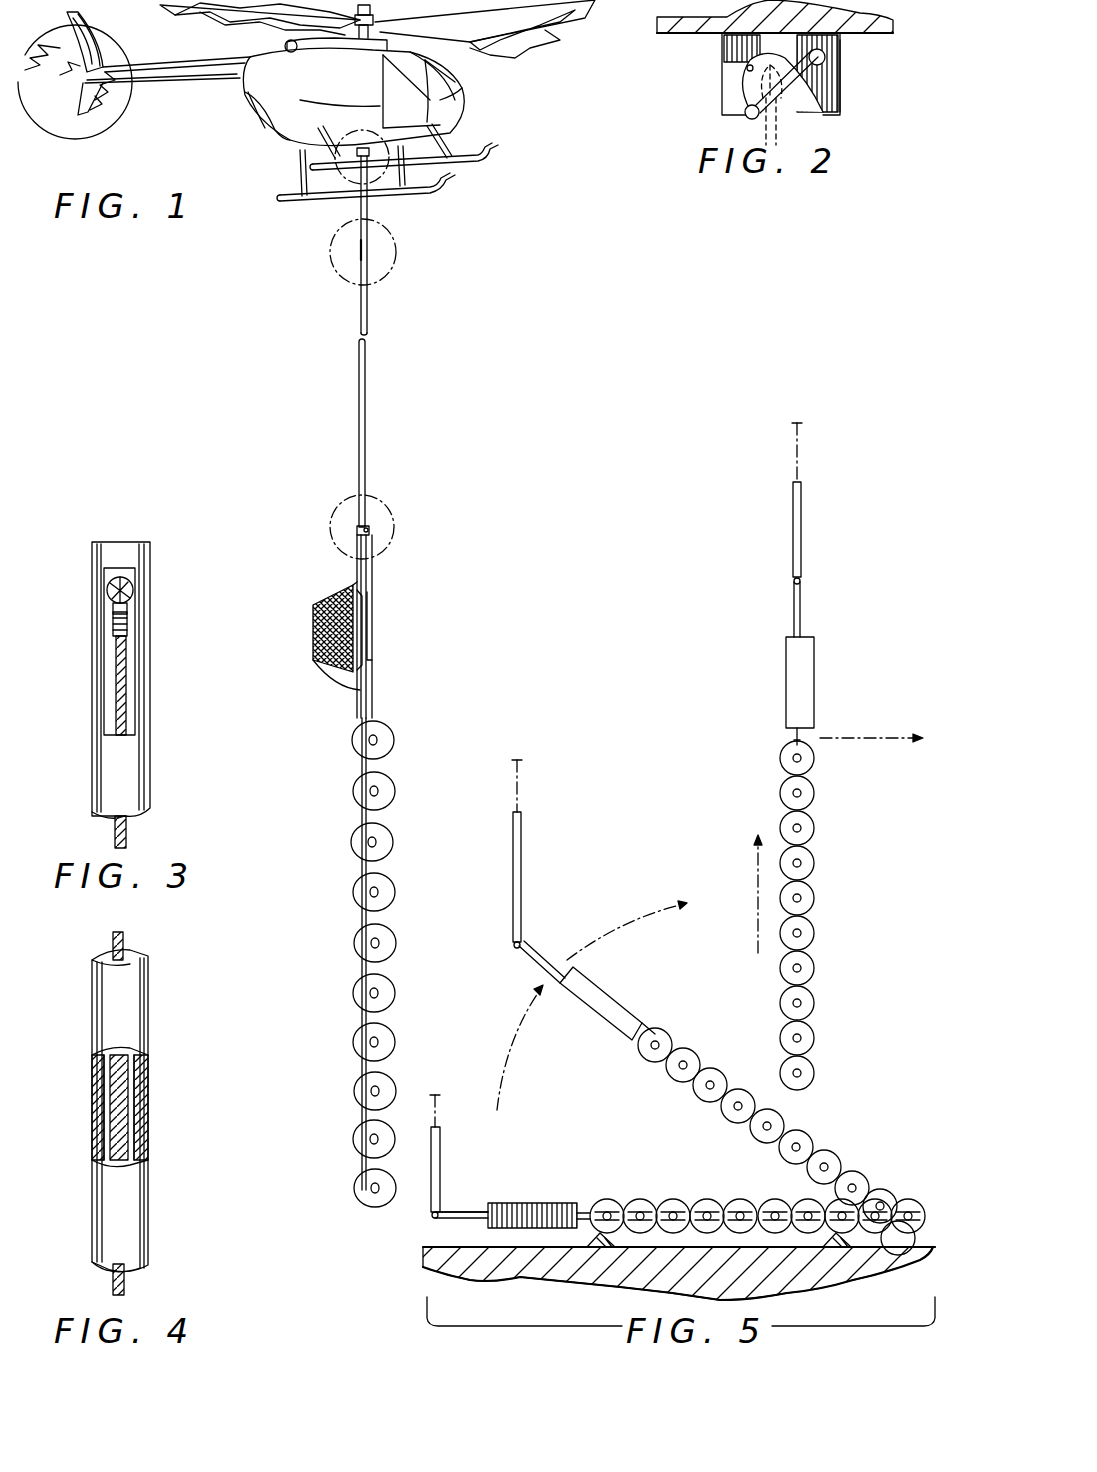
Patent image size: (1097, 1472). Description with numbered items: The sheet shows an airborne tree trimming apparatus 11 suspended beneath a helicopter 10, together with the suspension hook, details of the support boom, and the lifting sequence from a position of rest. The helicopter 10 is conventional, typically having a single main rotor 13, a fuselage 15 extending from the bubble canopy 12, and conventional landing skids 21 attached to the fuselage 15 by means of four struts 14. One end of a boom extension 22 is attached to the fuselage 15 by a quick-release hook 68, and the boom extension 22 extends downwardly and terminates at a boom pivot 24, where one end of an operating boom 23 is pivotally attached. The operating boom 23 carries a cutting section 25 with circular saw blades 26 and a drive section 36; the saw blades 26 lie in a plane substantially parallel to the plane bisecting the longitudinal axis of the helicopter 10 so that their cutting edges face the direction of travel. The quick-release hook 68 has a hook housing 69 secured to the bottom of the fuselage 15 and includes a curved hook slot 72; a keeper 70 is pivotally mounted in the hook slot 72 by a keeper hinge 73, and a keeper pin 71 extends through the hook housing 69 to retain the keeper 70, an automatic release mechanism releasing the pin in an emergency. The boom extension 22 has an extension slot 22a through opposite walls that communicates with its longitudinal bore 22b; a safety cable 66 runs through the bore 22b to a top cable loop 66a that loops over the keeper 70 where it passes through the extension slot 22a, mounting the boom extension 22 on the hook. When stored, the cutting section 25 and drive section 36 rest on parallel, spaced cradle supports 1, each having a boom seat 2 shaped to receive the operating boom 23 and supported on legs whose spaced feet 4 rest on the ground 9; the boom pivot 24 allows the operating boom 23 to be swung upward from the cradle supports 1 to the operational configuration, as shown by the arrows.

In FIG. 5, the cradle supports 1 is at (600, 1240).
In FIG. 1, the boom seat 2 is at (348, 130).
In FIG. 1, the spaced feet 4 is at (392, 240).
In FIG. 5, the ground 9 is at (455, 1232).
In FIG. 1, the helicopter 10 is at (252, 135).
In FIG. 1, the airborne tree trimming apparatus 11 is at (395, 527).
In FIG. 5, the airborne tree trimming apparatus 11 is at (780, 752).
In FIG. 1, the bubble canopy 12 is at (455, 88).
In FIG. 1, the main rotor 13 is at (540, 45).
In FIG. 1, the struts 14 is at (300, 152).
In FIG. 1, the fuselage 15 is at (205, 85).
In FIG. 2, the fuselage 15 is at (660, 38).
In FIG. 1, the landing skids 21 is at (455, 178).
In FIG. 1, the boom extension 22 is at (348, 302).
In FIG. 3, the boom extension 22 is at (155, 793).
In FIG. 4, the boom extension 22 is at (155, 1038).
In FIG. 5, the boom extension 22 is at (795, 527).
In FIG. 3, the extension slot 22a is at (108, 726).
In FIG. 3, the longitudinal bore 22b is at (130, 668).
In FIG. 4, the longitudinal bore 22b is at (130, 1097).
In FIG. 1, the operating boom 23 is at (380, 574).
In FIG. 1, the boom pivot 24 is at (345, 540).
In FIG. 5, the boom pivot 24 is at (785, 585).
In FIG. 1, the cutting section 25 is at (348, 838).
In FIG. 5, the cutting section 25 is at (778, 988).
In FIG. 1, the circular saw blades 26 is at (348, 744).
In FIG. 5, the circular saw blades 26 is at (820, 835).
In FIG. 1, the drive section 36 is at (312, 606).
In FIG. 5, the drive section 36 is at (782, 678).
In FIG. 2, the safety cable 66 is at (778, 138).
In FIG. 3, the safety cable 66 is at (130, 722).
In FIG. 4, the safety cable 66 is at (128, 940).
In FIG. 2, the top cable loop 66a is at (745, 96).
In FIG. 3, the top cable loop 66a is at (128, 602).
In FIG. 2, the quick-release hook 68 is at (716, 60).
In FIG. 2, the hook housing 69 is at (840, 78).
In FIG. 2, the keeper 70 is at (781, 105).
In FIG. 3, the keeper 70 is at (105, 596).
In FIG. 2, the keeper pin 71 is at (830, 56).
In FIG. 2, the hook slot 72 is at (745, 80).
In FIG. 2, the keeper hinge 73 is at (750, 118).